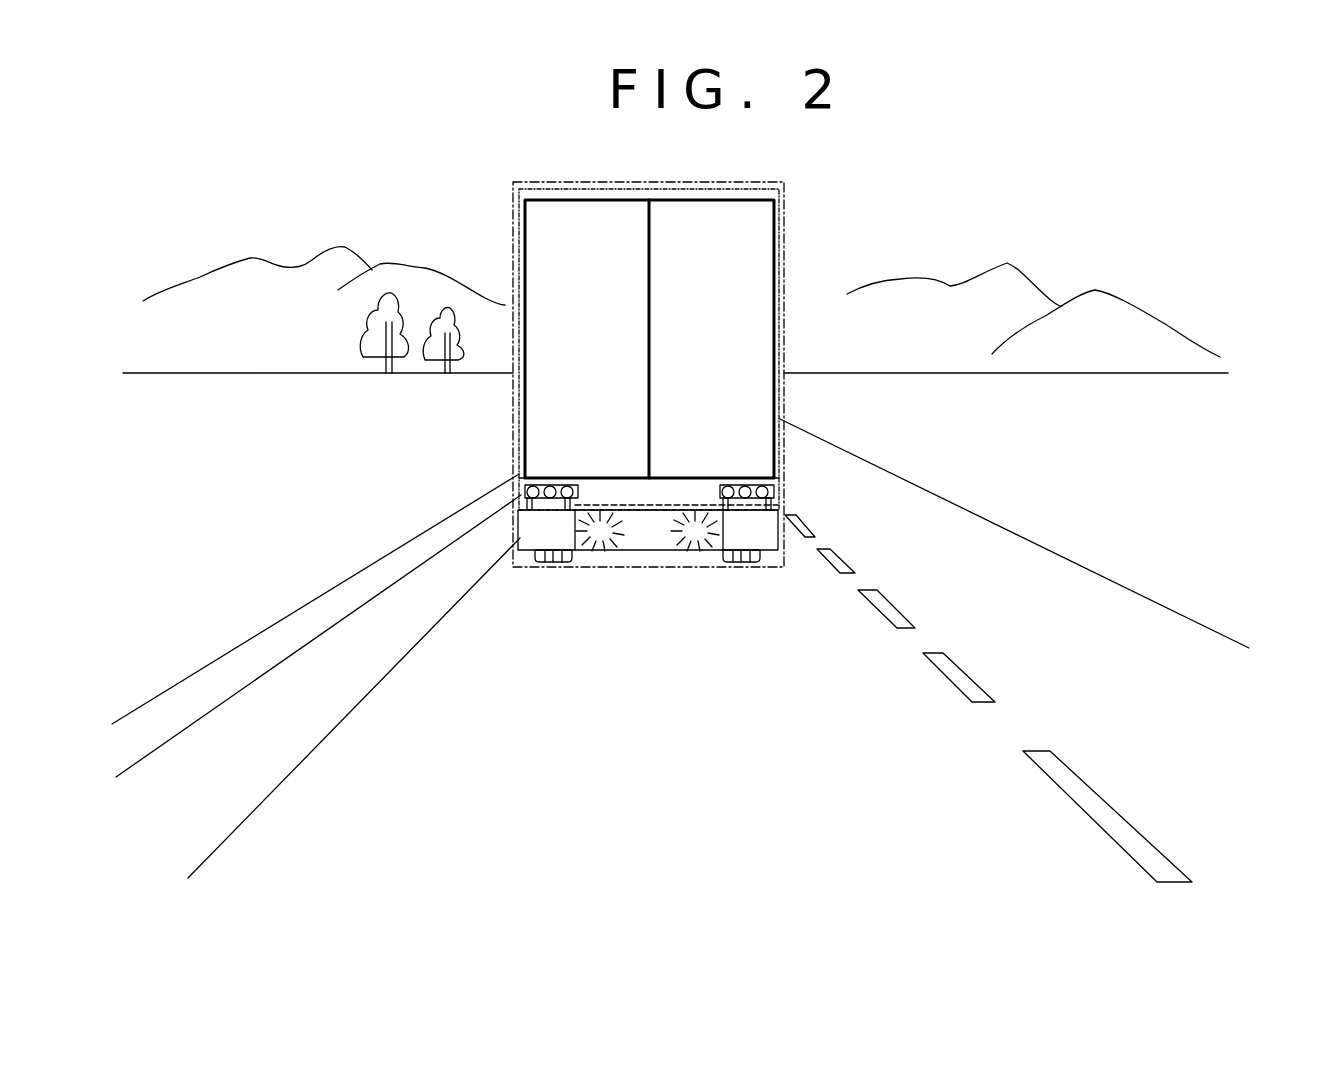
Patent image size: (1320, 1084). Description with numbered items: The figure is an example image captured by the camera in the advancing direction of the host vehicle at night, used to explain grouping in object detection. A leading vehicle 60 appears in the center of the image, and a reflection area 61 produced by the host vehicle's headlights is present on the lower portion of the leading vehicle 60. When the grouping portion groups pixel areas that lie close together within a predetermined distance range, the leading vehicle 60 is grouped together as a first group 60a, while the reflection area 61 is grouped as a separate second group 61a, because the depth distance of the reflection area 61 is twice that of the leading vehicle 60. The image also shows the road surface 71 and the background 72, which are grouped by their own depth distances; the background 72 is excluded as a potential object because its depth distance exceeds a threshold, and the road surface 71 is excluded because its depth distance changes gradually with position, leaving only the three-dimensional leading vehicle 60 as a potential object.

The leading vehicle 60 is at (697, 416).
The first group 60a is at (785, 333).
The reflection area 61 is at (595, 545).
The second group 61a is at (655, 555).
The road surface 71 is at (416, 727).
The background 72 is at (407, 263).